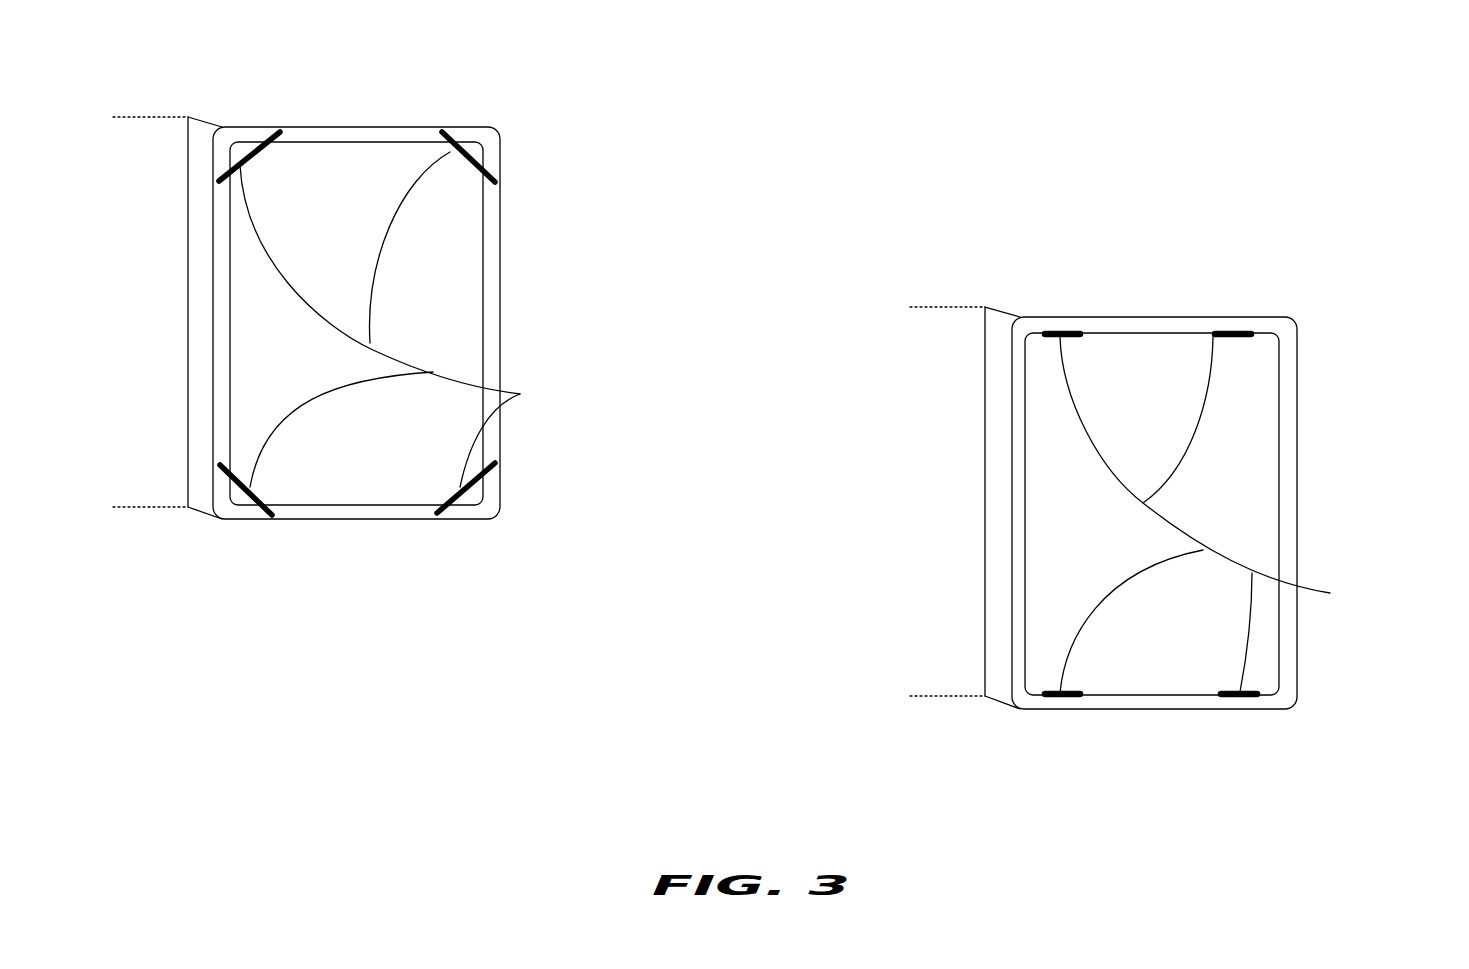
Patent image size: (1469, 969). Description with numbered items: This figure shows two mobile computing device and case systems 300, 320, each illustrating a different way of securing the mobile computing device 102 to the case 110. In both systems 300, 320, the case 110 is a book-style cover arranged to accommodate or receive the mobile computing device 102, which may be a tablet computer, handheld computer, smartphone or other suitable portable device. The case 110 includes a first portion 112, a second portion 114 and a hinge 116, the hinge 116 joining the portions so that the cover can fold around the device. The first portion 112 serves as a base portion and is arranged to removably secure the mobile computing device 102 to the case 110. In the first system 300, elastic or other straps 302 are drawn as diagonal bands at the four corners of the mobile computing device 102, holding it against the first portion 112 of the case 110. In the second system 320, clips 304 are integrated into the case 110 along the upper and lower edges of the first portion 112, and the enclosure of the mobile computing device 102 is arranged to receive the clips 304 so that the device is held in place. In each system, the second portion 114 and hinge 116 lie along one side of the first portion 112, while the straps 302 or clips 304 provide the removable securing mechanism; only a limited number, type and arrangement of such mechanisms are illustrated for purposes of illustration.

The mobile computing device and case system 300 is at (388, 35).
The mobile computing device and case system 320 is at (1192, 223).
The case 110 is at (438, 113).
The first portion 112 is at (493, 218).
The mobile computing device 102 is at (826, 409).
The second portion 114 is at (143, 140).
The hinge 116 is at (200, 493).
The straps 302 is at (520, 394).
The clips 304 is at (1330, 593).